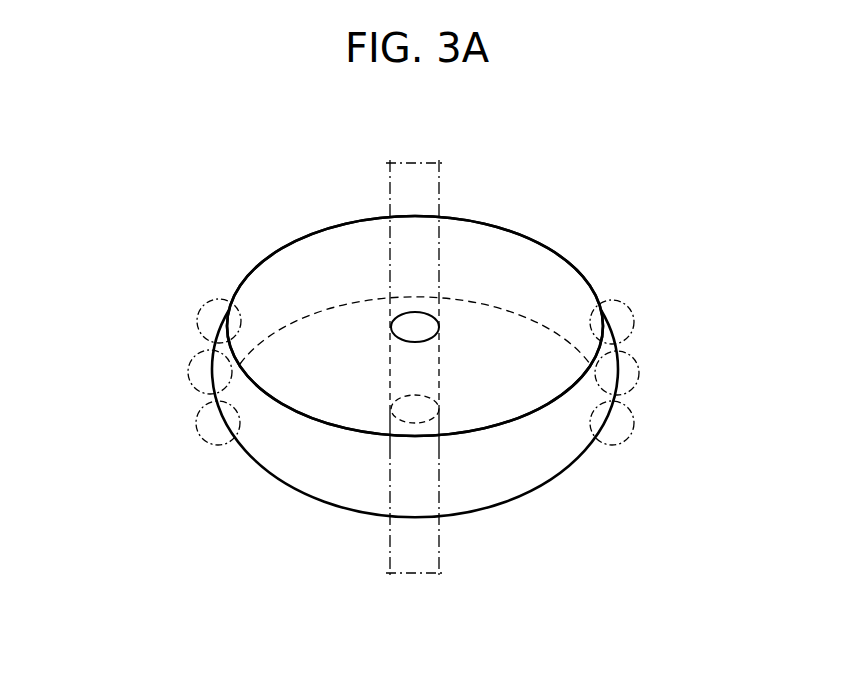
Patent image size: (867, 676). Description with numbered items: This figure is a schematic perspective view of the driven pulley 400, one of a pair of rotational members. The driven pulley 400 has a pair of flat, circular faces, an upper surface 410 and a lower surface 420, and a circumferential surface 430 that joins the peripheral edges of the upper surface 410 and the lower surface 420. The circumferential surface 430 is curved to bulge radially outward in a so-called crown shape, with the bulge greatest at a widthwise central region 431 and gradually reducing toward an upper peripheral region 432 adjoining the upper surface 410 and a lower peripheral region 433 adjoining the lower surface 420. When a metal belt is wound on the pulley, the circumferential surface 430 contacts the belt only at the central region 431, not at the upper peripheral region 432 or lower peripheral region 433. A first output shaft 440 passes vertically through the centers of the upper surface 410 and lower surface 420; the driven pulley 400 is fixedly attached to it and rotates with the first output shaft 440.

The driven pulley 400 is at (268, 223).
The upper surface 410 is at (542, 267).
The lower surface 420 is at (512, 473).
The circumferential surface 430 is at (101, 268).
The widthwise central region 431 is at (193, 367).
The upper peripheral region 432 is at (203, 312).
The lower peripheral region 433 is at (200, 428).
The first output shaft 440 is at (427, 184).